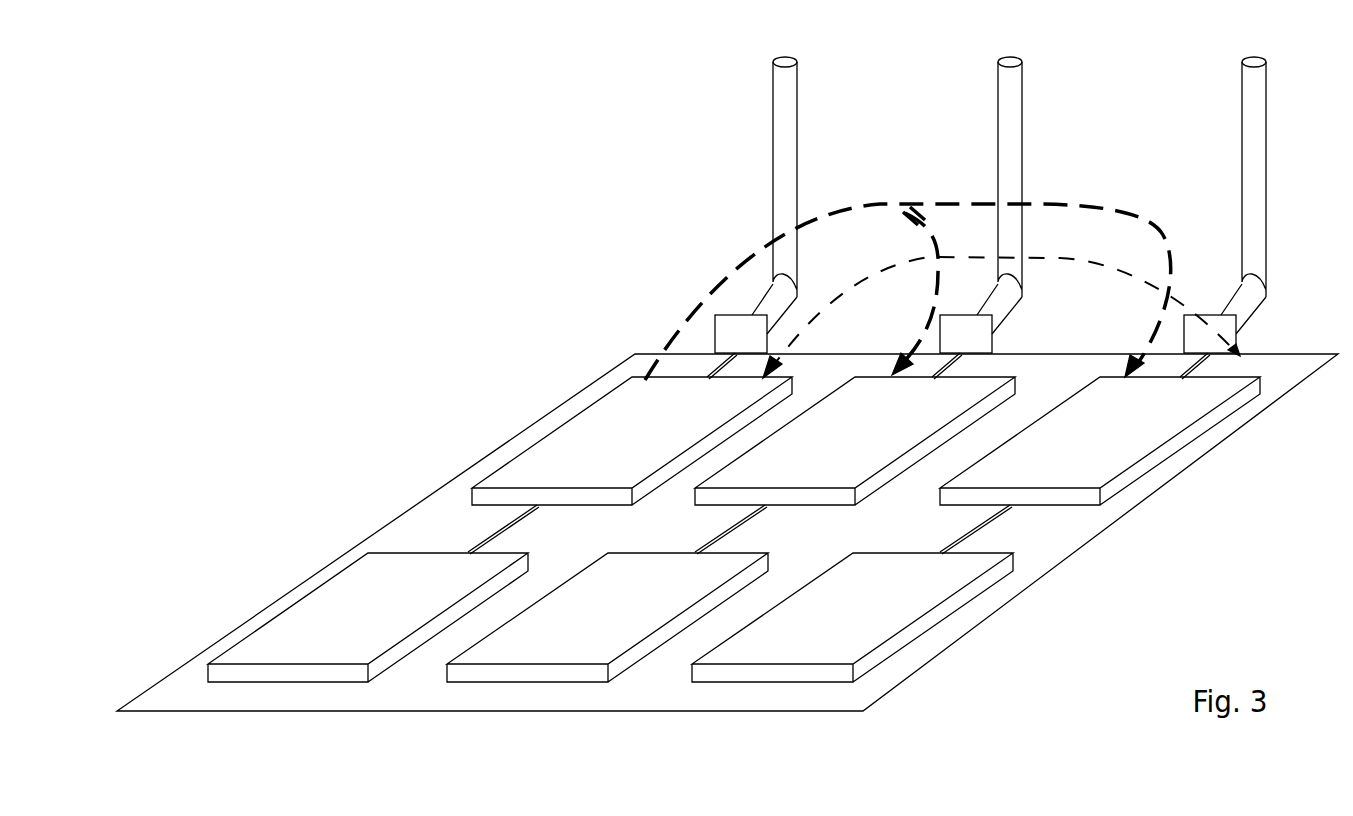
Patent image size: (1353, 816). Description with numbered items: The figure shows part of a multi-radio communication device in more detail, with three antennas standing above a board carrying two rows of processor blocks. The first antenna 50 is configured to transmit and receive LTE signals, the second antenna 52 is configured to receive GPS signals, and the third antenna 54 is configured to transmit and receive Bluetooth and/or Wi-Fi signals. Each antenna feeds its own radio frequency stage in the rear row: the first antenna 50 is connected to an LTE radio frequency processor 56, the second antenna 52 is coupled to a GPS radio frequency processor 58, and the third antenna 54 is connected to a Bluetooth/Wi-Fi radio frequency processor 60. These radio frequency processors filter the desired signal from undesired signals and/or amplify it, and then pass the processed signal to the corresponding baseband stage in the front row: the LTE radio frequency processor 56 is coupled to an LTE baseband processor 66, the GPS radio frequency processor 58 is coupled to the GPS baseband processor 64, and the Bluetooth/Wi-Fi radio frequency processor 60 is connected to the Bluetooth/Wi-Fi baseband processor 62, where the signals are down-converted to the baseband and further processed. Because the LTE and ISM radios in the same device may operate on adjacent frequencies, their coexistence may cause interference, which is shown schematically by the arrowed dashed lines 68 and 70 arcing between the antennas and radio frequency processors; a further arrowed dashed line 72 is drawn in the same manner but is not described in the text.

The first antenna 50 is at (803, 72).
The second antenna 52 is at (1025, 90).
The third antenna 54 is at (1270, 90).
The LTE radio frequency processor 56 is at (541, 485).
The GPS radio frequency processor 58 is at (760, 485).
The Bluetooth/Wi-Fi radio frequency processor 60 is at (1023, 485).
The Bluetooth/Wi-Fi baseband processor 62 is at (928, 601).
The GPS baseband processor 64 is at (676, 601).
The LTE baseband processor 66 is at (430, 601).
The arrowed dashed line 68 is at (1112, 262).
The arrowed dashed line 70 is at (1160, 228).
The coupling path to GPS RF 72 is at (932, 238).